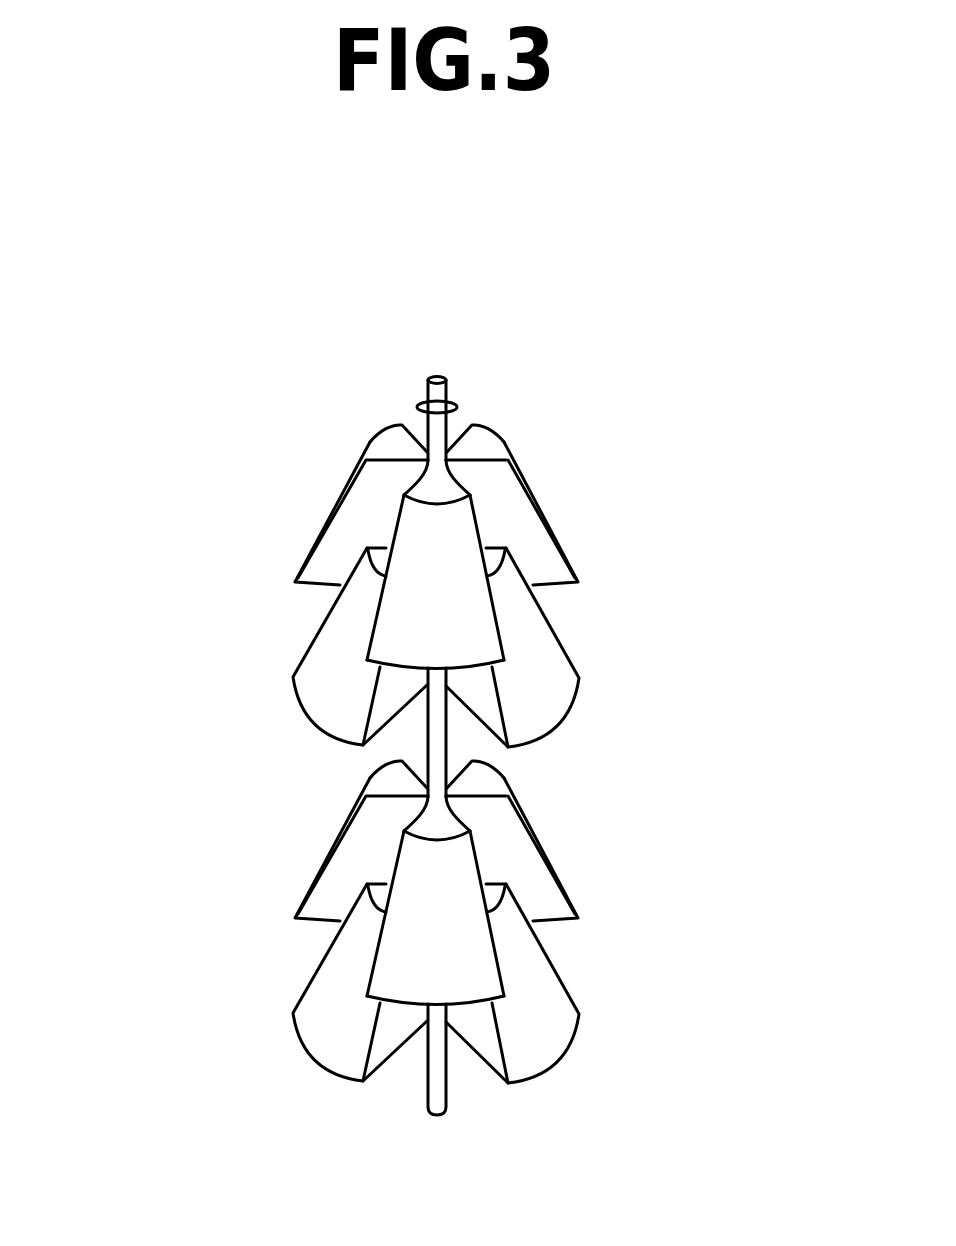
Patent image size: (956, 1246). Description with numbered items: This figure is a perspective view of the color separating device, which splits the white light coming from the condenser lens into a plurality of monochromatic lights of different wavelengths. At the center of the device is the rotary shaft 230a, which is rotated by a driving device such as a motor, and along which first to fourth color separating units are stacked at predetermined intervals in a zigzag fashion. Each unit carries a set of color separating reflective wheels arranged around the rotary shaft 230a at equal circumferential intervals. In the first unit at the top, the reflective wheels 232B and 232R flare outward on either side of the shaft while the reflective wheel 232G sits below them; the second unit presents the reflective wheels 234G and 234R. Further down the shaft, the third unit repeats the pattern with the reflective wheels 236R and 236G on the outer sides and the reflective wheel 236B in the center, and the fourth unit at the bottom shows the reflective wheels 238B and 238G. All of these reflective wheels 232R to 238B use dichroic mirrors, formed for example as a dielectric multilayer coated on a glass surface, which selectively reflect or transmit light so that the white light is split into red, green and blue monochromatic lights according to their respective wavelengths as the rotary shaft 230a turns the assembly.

The rotary shaft 230a is at (437, 372).
The color separating reflective wheel 232B is at (378, 445).
The color separating reflective wheel 232R is at (493, 433).
The color separating reflective wheel 232G is at (478, 523).
The color separating reflective wheel 234G is at (315, 640).
The color separating reflective wheel 234R is at (555, 628).
The color separating reflective wheel 236R is at (340, 838).
The color separating reflective wheel 236G is at (540, 843).
The color separating reflective wheel 236B is at (493, 942).
The color separating reflective wheel 238B is at (310, 973).
The color separating reflective wheel 238G is at (555, 973).